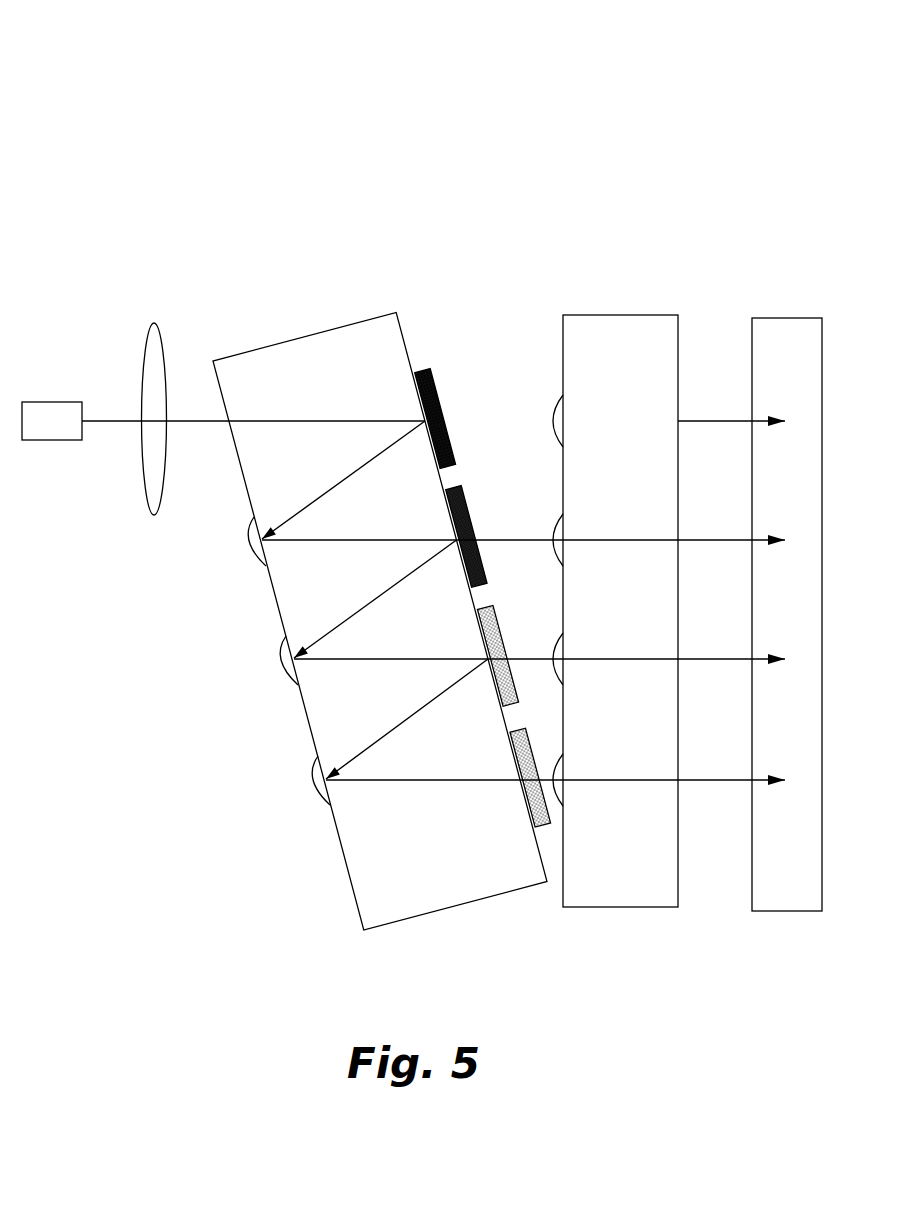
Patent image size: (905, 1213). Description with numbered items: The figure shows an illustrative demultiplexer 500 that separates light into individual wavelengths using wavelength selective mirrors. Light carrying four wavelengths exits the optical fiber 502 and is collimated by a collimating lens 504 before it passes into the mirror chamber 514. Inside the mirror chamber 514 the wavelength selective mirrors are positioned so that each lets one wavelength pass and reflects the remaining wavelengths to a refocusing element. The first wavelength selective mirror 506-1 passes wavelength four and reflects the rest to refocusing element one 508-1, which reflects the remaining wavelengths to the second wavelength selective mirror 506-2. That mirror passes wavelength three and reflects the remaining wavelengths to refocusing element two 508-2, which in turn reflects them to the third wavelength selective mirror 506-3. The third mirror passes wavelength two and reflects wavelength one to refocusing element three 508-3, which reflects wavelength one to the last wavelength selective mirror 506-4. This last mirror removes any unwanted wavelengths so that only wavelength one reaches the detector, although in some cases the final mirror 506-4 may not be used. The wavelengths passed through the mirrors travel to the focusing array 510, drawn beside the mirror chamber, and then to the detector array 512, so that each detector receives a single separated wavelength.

The demultiplexer 500 is at (190, 138).
The optical fiber 502 is at (56, 402).
The collimating lens 504 is at (154, 323).
The first wavelength selective mirror 506-1 is at (434, 382).
The second wavelength selective mirror 506-2 is at (480, 518).
The third wavelength selective mirror 506-3 is at (505, 634).
The last wavelength selective mirror 506-4 is at (512, 752).
The refocusing element 1 508-1 is at (248, 543).
The refocusing element 2 508-2 is at (280, 662).
The refocusing element 3 508-3 is at (313, 782).
The focusing array 510 is at (617, 315).
The detector array 512 is at (785, 318).
The mirror chamber 514 is at (380, 621).